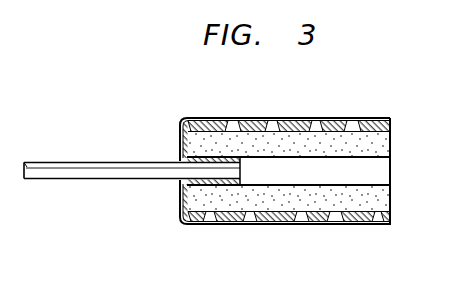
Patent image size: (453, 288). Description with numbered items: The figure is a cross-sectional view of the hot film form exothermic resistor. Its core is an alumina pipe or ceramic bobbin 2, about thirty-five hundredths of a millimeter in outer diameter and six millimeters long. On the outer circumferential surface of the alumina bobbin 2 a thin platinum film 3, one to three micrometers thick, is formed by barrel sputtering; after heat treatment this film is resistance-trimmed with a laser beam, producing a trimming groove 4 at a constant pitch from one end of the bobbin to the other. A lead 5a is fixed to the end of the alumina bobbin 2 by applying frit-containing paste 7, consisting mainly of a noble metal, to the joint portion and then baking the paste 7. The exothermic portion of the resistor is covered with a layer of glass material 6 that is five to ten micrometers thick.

The alumina bobbin 2 is at (199, 121).
The thin platinum film 3 is at (352, 125).
The trimming groove 4 is at (337, 222).
The lead 5a is at (90, 179).
The glass material 6 is at (297, 121).
The frit-containing paste 7 is at (221, 185).